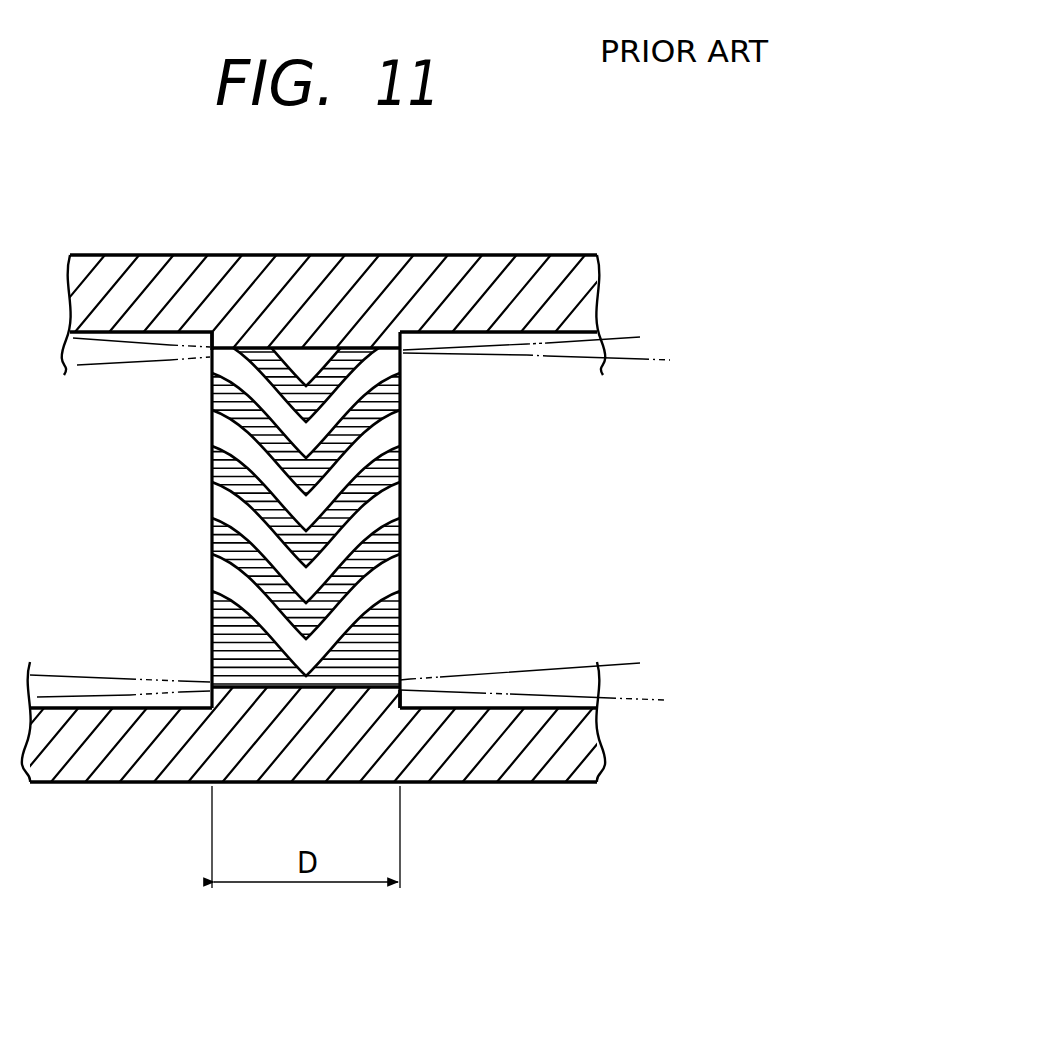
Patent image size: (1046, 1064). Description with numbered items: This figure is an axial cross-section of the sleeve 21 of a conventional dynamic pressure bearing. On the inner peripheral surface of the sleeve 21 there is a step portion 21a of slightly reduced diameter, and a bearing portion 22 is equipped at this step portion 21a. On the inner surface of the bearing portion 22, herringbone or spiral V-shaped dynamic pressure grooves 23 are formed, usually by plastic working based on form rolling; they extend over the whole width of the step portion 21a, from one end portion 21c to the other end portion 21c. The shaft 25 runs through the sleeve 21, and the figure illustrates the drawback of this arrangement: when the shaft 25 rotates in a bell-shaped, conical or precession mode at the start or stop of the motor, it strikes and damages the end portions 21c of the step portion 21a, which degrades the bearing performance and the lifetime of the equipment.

The sleeve 21 is at (468, 275).
The step portion 21a is at (212, 340).
The end portion of the step portion 21c is at (211, 427).
The bearing portion 22 is at (268, 400).
The dynamic pressure grooves 23 is at (375, 493).
The shaft 25 is at (641, 355).